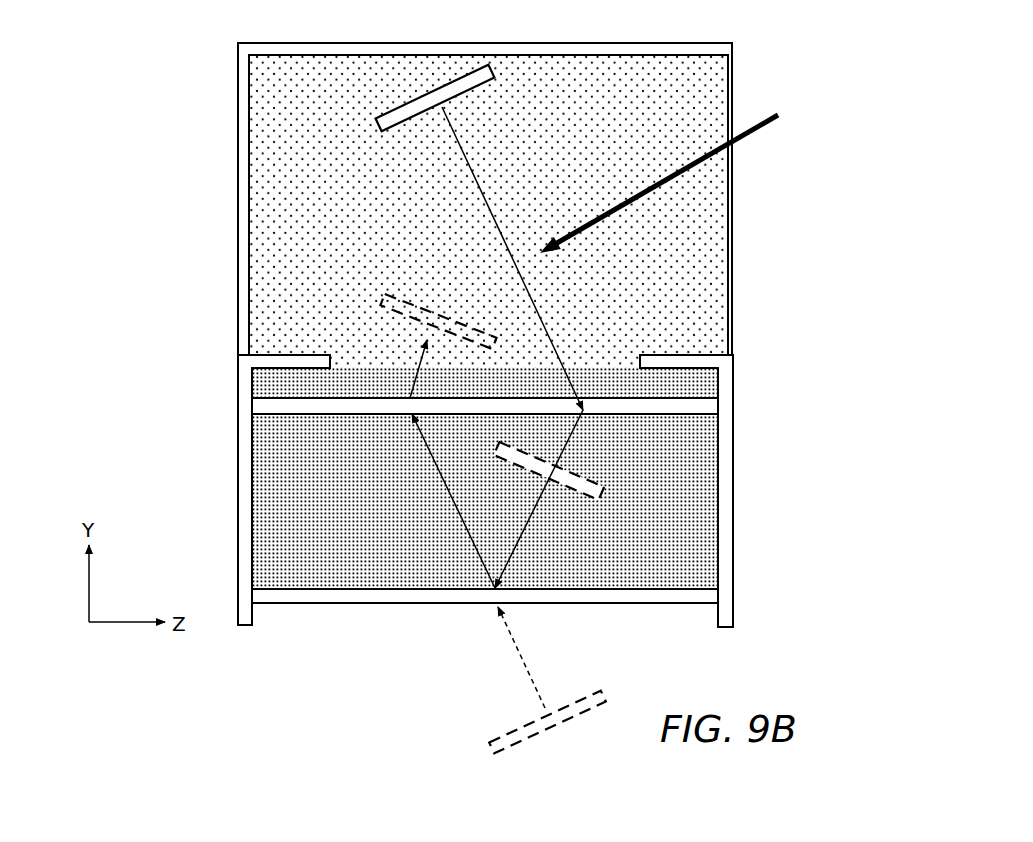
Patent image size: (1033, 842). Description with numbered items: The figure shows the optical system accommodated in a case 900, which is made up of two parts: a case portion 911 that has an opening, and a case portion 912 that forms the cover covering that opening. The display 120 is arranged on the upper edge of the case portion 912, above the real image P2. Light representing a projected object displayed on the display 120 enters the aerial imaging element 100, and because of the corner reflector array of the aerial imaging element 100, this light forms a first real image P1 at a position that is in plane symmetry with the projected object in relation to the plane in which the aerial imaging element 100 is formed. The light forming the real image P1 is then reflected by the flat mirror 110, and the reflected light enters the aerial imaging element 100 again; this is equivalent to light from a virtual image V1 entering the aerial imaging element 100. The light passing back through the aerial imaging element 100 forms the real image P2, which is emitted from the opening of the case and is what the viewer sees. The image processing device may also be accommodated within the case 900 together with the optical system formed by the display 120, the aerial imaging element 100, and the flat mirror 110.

The case 900 is at (711, 34).
The case portion 912 is at (238, 196).
The case portion 911 is at (238, 489).
The aerial imaging element 100 is at (305, 416).
The flat mirror 110 is at (305, 586).
The display 120 is at (481, 94).
The real image P1 is at (601, 480).
The real image P2 is at (465, 324).
The virtual image V1 is at (604, 694).